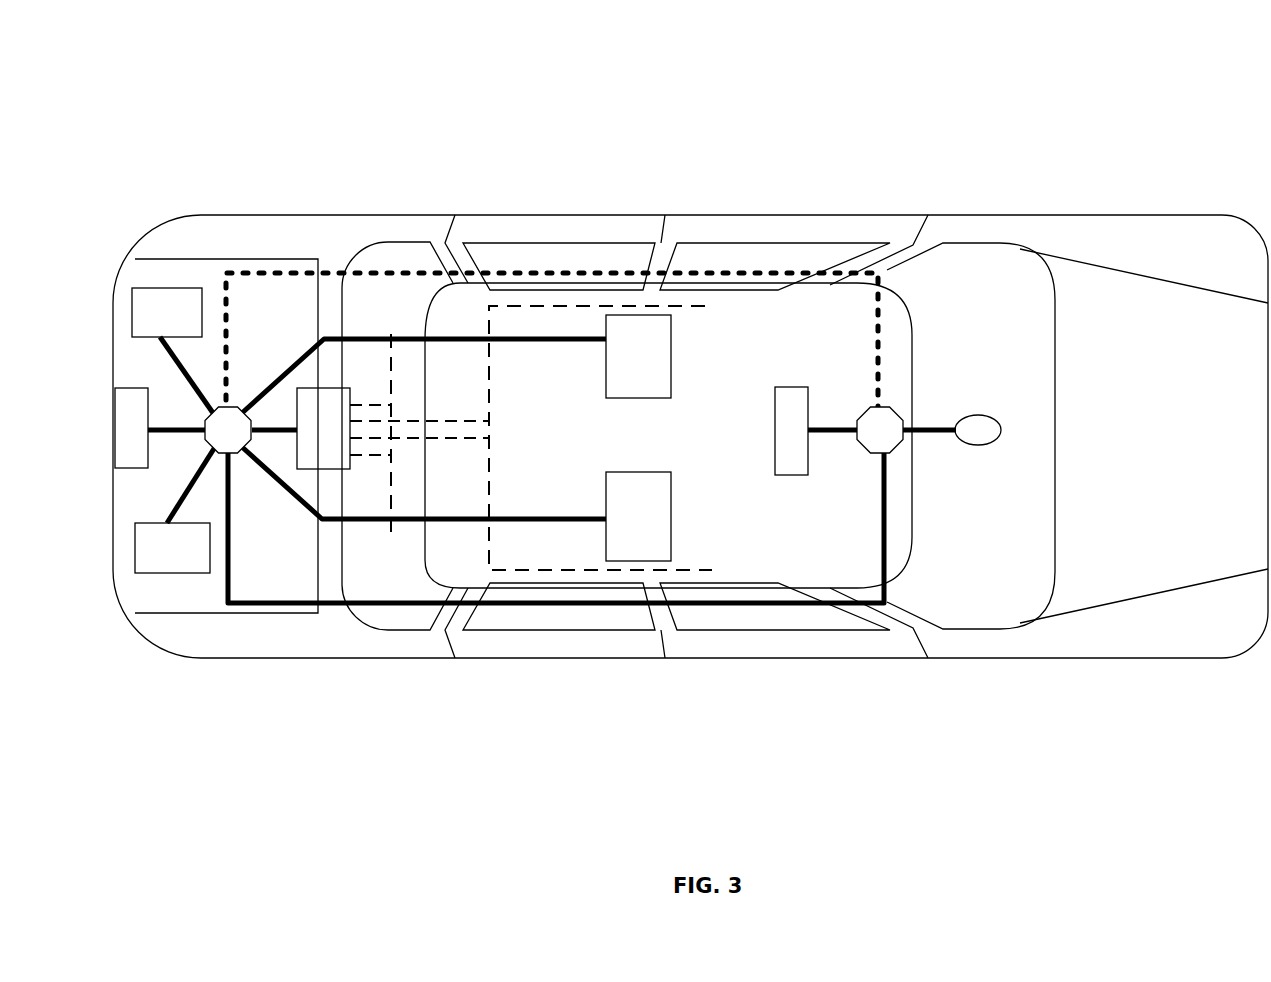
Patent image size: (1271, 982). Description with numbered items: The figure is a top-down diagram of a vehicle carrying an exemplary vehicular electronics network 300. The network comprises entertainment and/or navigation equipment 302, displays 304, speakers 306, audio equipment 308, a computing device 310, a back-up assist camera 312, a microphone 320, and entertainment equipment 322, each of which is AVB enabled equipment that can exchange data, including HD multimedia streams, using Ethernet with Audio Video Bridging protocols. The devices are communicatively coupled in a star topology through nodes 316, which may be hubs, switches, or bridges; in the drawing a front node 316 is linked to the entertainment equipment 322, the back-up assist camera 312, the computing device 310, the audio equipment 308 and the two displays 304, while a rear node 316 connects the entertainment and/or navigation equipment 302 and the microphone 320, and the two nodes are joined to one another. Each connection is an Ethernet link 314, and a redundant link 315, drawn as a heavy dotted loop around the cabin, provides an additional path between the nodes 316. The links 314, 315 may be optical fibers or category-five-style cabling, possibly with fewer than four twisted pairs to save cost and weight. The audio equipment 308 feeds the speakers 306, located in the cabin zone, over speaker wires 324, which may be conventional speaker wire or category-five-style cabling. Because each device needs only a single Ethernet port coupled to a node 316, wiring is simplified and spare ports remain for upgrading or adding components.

The vehicular electronics network 300 is at (238, 91).
The entertainment and/or navigation equipment 302 is at (791, 431).
The displays 304 is at (638, 438).
The speakers 306 is at (392, 336).
The audio equipment 308 is at (323, 428).
The computing device 310 is at (172, 548).
The back-up assist camera 312 is at (131, 428).
The Ethernet links 314 is at (203, 366).
The redundant link 315 is at (232, 322).
The nodes 316 is at (554, 430).
The microphone 320 is at (978, 430).
The entertainment equipment 322 is at (167, 312).
The speaker wires 324 is at (386, 403).